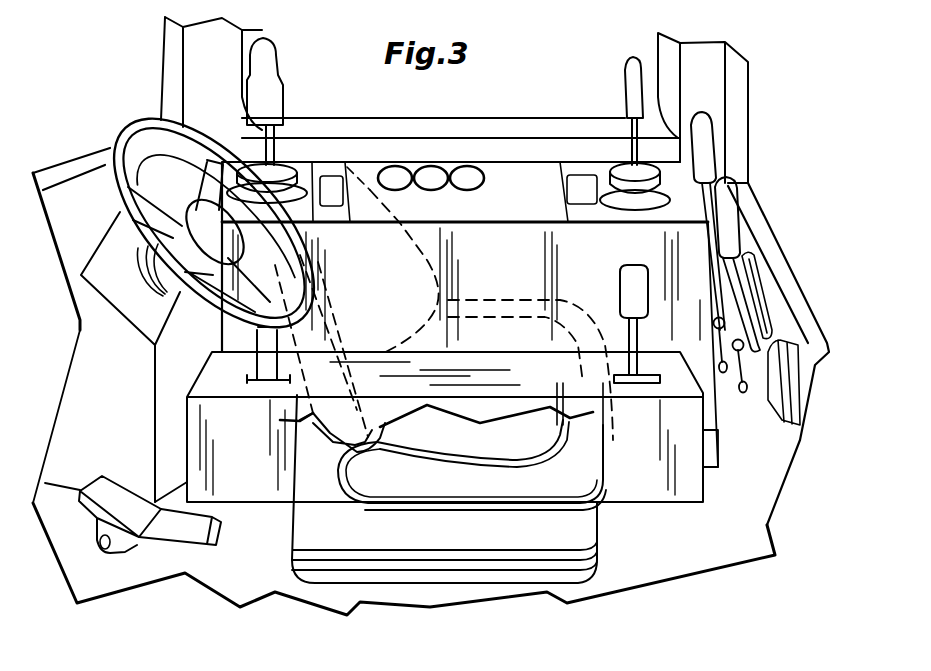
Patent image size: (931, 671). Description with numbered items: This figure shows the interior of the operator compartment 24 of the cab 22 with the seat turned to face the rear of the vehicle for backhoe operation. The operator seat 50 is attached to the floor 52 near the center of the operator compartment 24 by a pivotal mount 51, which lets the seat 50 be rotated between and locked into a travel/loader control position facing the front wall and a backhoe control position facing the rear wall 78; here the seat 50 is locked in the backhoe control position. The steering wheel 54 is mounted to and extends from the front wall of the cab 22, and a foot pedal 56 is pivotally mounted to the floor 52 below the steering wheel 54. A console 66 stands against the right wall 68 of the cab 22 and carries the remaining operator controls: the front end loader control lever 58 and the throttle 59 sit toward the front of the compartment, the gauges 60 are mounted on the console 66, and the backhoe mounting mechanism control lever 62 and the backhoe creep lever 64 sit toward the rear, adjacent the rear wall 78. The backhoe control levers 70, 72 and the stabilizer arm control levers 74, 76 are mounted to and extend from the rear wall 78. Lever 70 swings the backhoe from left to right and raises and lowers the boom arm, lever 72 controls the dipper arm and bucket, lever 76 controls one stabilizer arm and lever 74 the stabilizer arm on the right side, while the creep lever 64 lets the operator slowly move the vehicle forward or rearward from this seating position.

The cab 22 is at (713, 88).
The operator compartment 24 is at (119, 368).
The operator seat 50 is at (483, 443).
The pivotal mount 51 is at (342, 531).
The floor 52 is at (676, 542).
The steering wheel 54 is at (138, 125).
The foot pedal 56 is at (122, 491).
The front end loader control lever 58 is at (283, 80).
The throttle 59 is at (265, 368).
The gauges 60 is at (465, 172).
The backhoe mounting mechanism control lever 62 is at (625, 76).
The backhoe creep lever 64 is at (612, 300).
The console 66 is at (523, 172).
The right wall 68 is at (700, 55).
The backhoe control lever 70 is at (700, 147).
The backhoe control lever 72 is at (727, 210).
The stabilizer arm control lever 74 is at (714, 323).
The stabilizer arm control lever 76 is at (735, 374).
The rear wall 78 is at (775, 465).